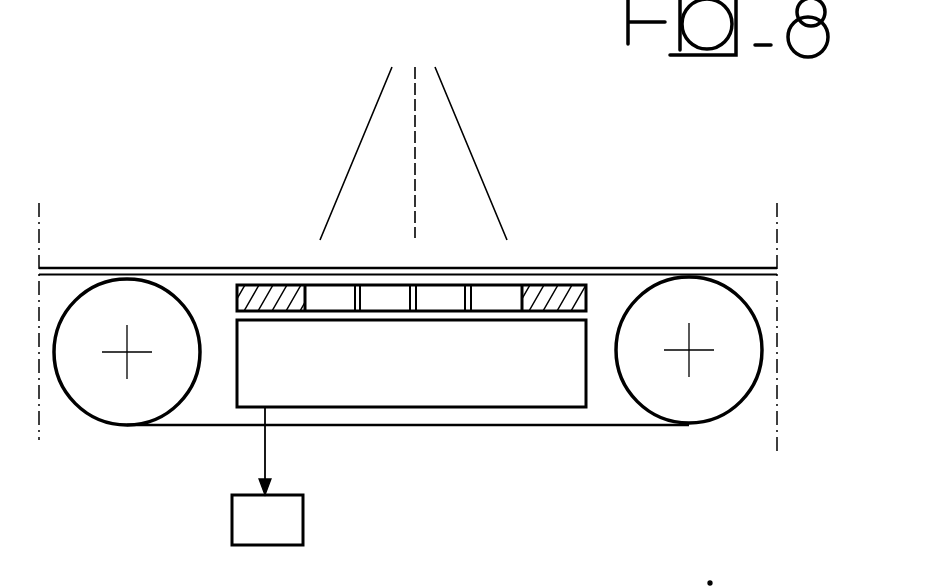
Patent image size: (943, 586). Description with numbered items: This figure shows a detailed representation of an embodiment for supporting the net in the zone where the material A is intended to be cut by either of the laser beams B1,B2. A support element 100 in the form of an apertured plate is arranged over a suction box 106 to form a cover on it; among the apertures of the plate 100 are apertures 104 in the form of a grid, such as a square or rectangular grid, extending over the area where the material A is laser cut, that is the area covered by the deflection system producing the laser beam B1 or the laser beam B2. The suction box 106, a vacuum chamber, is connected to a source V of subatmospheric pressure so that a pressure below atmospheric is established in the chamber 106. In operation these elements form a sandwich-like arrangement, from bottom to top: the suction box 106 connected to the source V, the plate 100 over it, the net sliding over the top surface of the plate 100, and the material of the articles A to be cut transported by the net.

The support element 100 is at (439, 403).
The apertures 104 is at (382, 307).
The suction box 106 is at (467, 385).
The source of subatmospheric pressure V is at (246, 527).
The material A is at (78, 274).
The laser beams B1,B2 is at (388, 153).
The laser beam B1 is at (388, 153).
The laser beam B2 is at (371, 167).